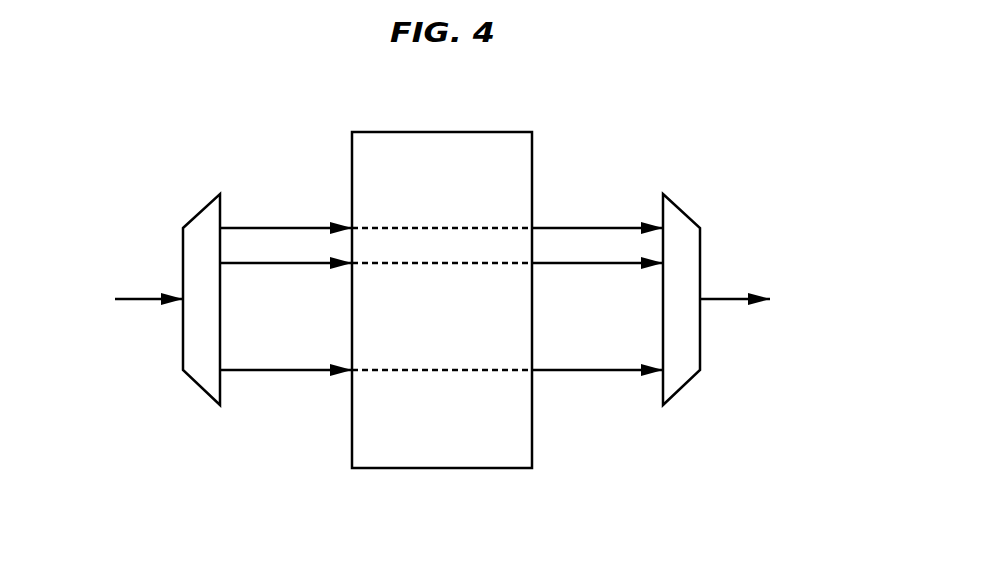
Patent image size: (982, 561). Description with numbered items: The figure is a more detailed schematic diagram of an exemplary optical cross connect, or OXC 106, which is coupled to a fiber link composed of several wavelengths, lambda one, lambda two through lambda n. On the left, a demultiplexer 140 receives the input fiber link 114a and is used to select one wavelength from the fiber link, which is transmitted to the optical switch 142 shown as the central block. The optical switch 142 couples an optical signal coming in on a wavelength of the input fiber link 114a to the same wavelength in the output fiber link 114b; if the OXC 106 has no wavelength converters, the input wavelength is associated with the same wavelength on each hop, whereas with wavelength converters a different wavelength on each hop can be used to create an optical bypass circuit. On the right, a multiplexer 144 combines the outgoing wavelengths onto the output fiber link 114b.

The OXC 106 is at (457, 78).
The demultiplexer 140 is at (201, 214).
The optical switch 142 is at (440, 468).
The multiplexer 144 is at (687, 214).
The input fiber link 114a is at (150, 301).
The output fiber link 114b is at (718, 301).